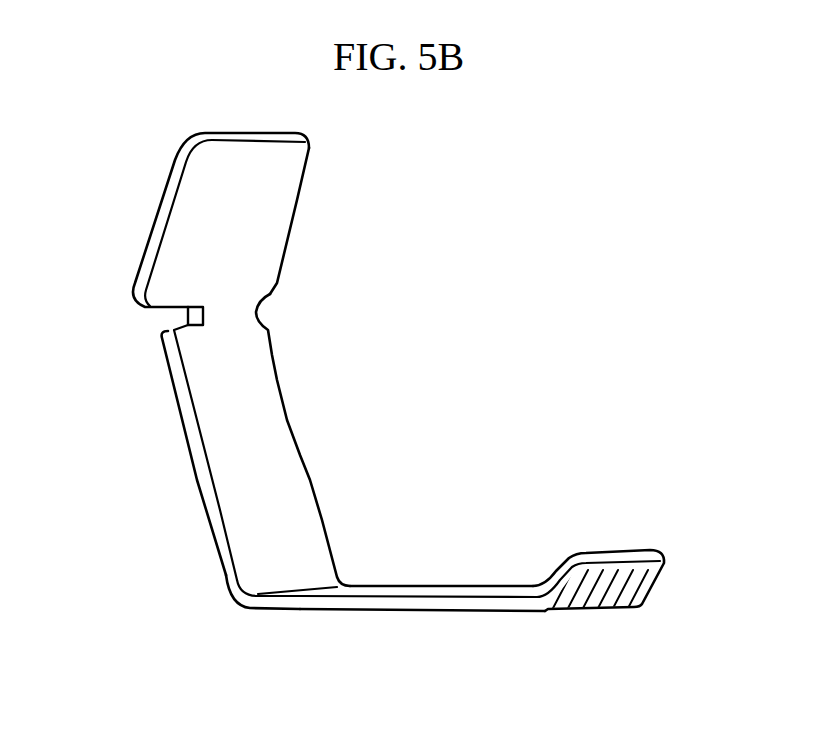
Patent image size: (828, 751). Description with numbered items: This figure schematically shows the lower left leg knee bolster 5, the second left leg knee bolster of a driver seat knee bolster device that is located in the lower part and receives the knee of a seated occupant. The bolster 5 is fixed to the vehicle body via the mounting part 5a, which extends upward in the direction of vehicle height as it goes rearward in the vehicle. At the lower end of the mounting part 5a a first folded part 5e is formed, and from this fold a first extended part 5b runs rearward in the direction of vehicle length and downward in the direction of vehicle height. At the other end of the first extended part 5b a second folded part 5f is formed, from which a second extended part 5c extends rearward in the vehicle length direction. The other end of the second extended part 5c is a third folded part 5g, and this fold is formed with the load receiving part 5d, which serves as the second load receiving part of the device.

The lower left leg knee bolster 5 is at (371, 430).
The mounting part 5a is at (283, 222).
The first extended part 5b is at (275, 382).
The second extended part 5c is at (442, 587).
The load receiving part 5d is at (621, 614).
The first folded part 5e is at (186, 322).
The second folded part 5f is at (232, 593).
The third folded part 5g is at (548, 603).